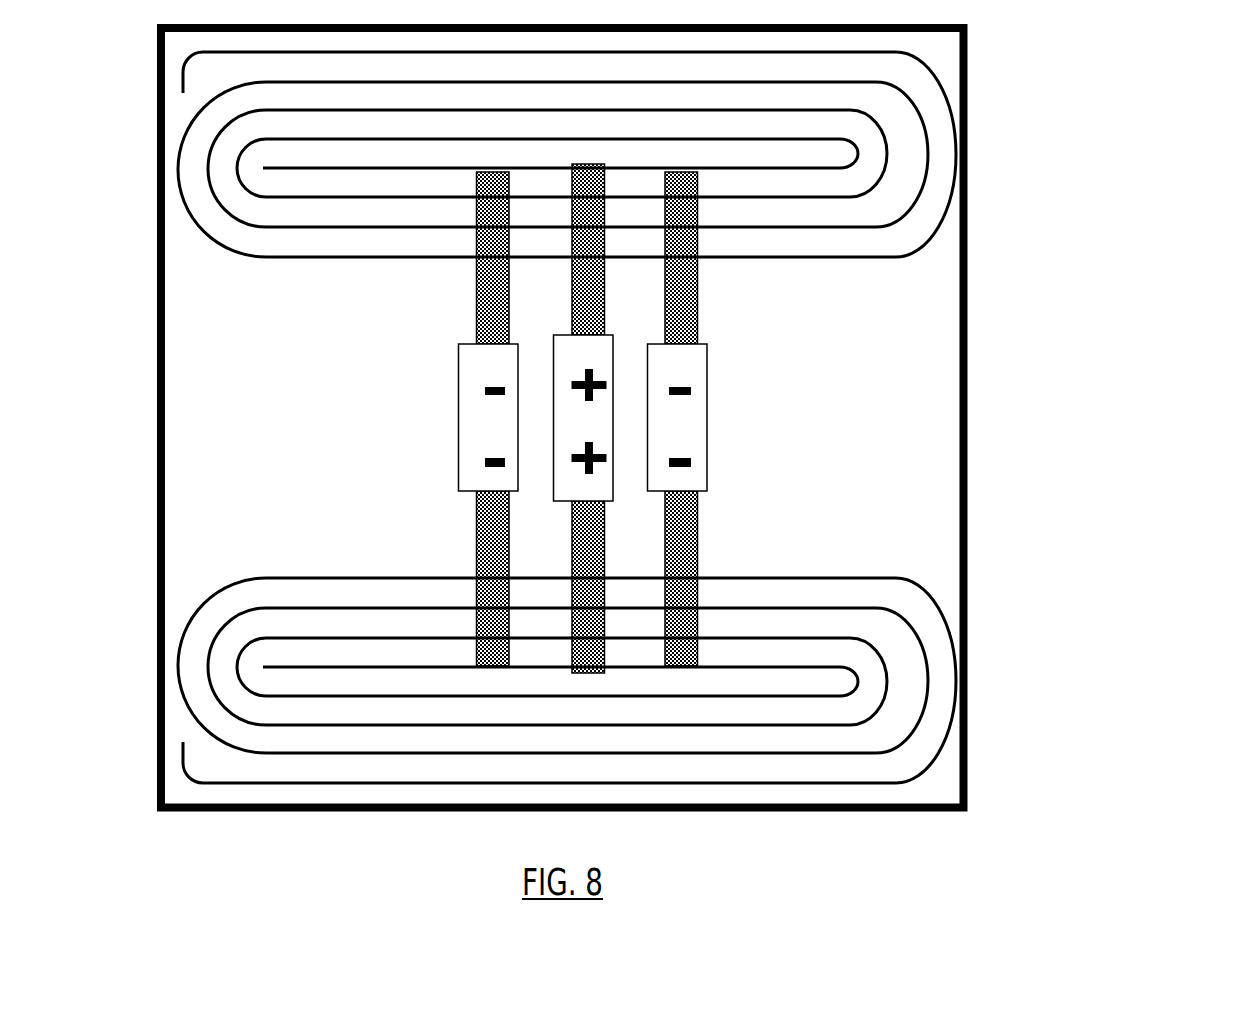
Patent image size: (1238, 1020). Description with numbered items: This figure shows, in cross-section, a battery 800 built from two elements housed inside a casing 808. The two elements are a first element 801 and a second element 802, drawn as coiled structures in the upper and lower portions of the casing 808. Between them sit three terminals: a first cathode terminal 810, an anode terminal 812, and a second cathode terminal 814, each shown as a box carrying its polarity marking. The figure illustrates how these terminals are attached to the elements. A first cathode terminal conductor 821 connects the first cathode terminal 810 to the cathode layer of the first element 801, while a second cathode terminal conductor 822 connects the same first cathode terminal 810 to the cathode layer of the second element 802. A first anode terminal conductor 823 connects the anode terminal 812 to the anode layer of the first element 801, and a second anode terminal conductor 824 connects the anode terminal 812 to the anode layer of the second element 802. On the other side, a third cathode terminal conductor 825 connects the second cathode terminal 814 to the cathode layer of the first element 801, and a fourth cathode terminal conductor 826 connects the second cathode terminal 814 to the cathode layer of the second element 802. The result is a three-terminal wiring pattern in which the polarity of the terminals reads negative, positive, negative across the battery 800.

The battery 800 is at (627, 418).
The casing 808 is at (967, 233).
The first element 801 is at (182, 73).
The second element 802 is at (182, 749).
The first cathode terminal 810 is at (468, 430).
The anode terminal 812 is at (563, 430).
The second cathode terminal 814 is at (657, 430).
The first cathode terminal conductor 821 is at (476, 310).
The second cathode terminal conductor 822 is at (476, 515).
The first anode terminal conductor 823 is at (572, 283).
The second anode terminal conductor 824 is at (572, 560).
The third cathode terminal conductor 825 is at (697, 295).
The fourth cathode terminal conductor 826 is at (697, 545).